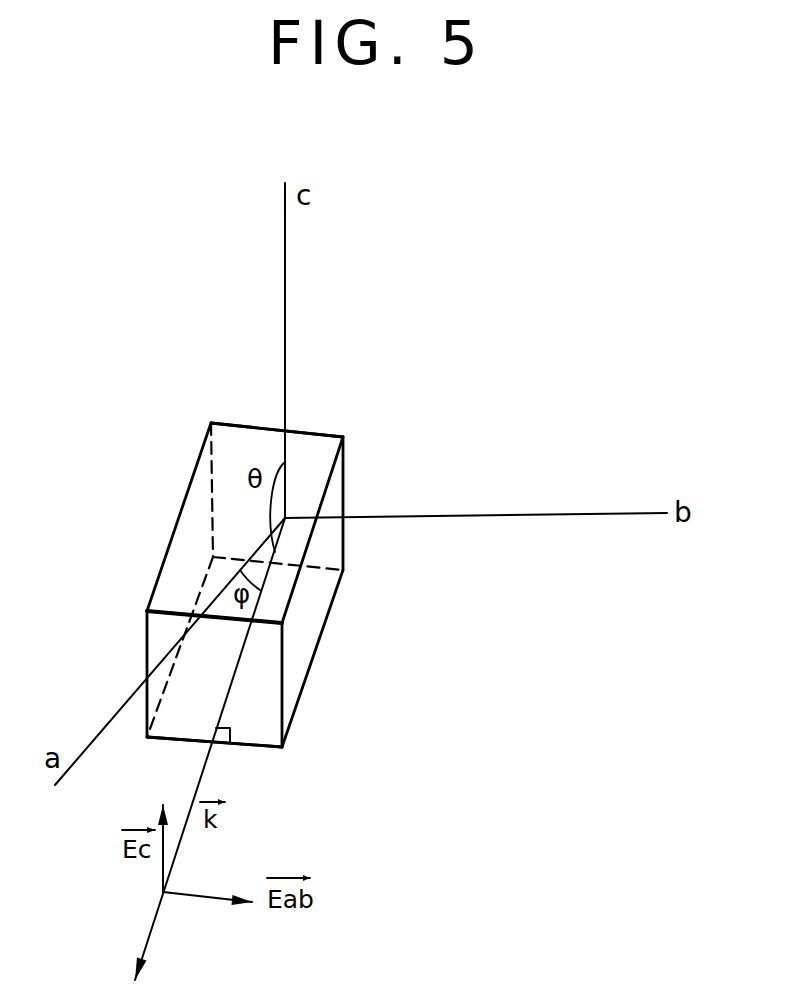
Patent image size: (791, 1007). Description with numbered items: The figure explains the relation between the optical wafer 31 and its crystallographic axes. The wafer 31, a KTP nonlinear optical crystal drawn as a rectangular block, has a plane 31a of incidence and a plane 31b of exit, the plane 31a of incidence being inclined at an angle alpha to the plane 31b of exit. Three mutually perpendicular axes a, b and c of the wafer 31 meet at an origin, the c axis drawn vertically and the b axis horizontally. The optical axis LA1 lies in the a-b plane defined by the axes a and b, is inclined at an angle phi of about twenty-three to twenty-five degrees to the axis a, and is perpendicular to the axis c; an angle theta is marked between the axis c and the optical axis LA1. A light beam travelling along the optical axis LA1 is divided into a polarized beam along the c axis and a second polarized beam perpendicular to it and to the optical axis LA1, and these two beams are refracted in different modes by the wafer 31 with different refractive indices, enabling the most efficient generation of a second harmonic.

The wafer 31 is at (320, 592).
The plane of incidence 31a is at (310, 465).
The plane of exit 31b is at (265, 707).
The optical axis LA1 is at (157, 913).